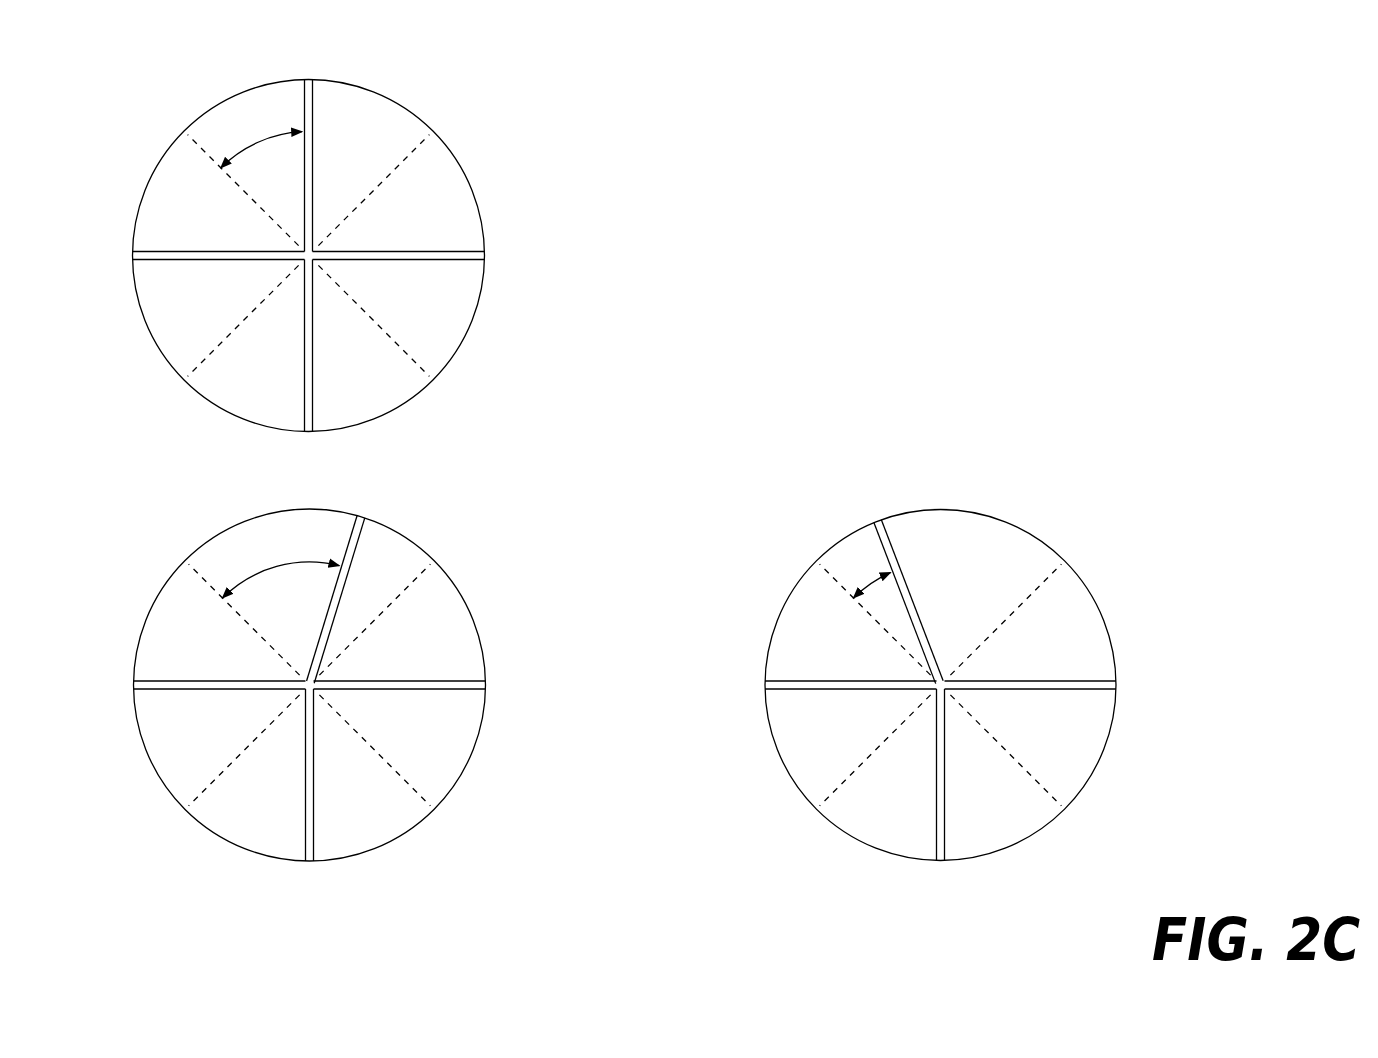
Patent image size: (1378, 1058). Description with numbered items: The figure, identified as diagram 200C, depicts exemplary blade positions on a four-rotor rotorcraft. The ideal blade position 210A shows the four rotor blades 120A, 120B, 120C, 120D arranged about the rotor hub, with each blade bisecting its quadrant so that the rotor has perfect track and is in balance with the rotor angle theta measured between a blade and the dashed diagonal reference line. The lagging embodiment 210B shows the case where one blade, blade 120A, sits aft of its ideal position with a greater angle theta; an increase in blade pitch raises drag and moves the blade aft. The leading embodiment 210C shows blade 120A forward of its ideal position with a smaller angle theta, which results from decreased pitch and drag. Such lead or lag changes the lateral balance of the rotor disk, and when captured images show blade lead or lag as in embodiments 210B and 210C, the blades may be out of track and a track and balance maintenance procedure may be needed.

The blade position diagram 200C is at (1152, 256).
The ideal blade position 210A is at (490, 133).
The lagging blade embodiment 210B is at (490, 564).
The leading blade embodiment 210C is at (1120, 564).
The rotor blade 120A is at (313, 100).
The rotor blade 120B is at (467, 260).
The rotor blade 120C is at (303, 414).
The rotor blade 120D is at (138, 251).